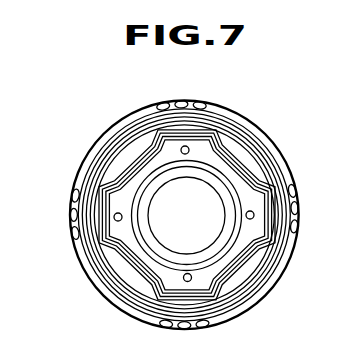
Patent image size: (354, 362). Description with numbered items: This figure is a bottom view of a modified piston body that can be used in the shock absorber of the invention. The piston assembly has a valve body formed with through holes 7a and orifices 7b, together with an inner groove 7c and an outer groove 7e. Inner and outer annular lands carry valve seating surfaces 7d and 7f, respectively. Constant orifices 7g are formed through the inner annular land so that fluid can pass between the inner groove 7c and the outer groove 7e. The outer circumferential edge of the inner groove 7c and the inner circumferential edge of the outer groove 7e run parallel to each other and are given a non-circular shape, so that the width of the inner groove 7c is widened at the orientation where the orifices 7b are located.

The through holes 7a is at (300, 230).
The orifices 7b is at (189, 148).
The inner groove 7c is at (112, 188).
The valve seating surface 7d is at (142, 152).
The outer groove 7e is at (70, 203).
The valve seating surface 7f is at (90, 250).
The constant orifices 7g is at (128, 161).